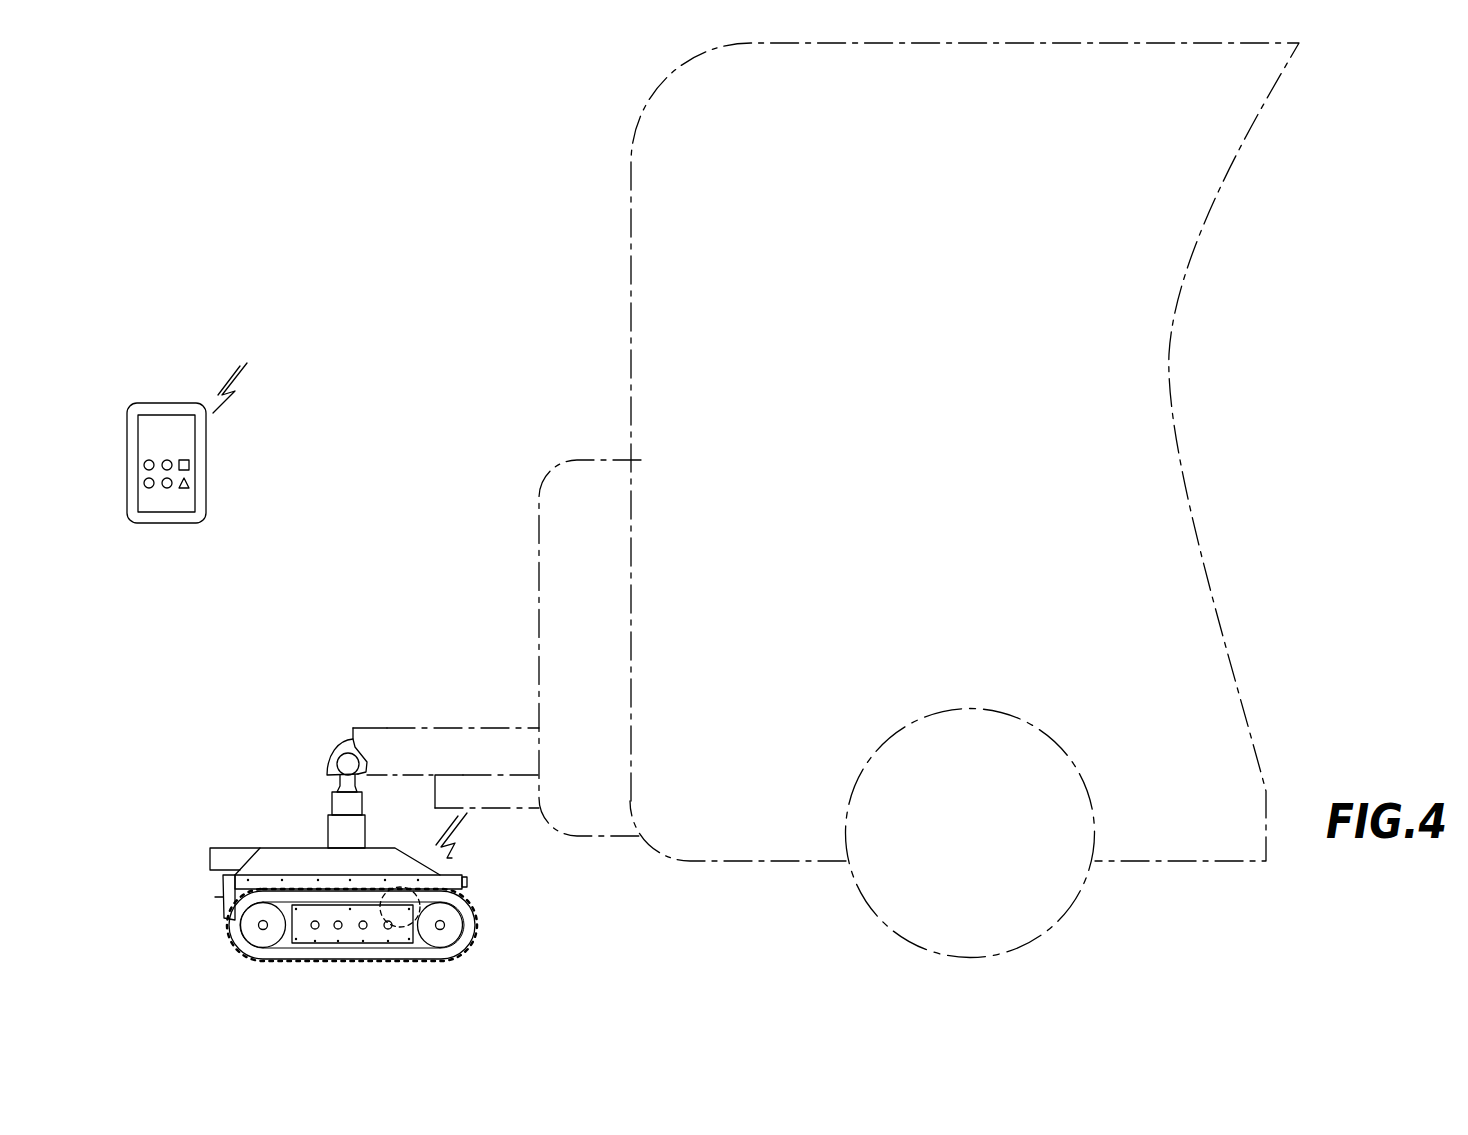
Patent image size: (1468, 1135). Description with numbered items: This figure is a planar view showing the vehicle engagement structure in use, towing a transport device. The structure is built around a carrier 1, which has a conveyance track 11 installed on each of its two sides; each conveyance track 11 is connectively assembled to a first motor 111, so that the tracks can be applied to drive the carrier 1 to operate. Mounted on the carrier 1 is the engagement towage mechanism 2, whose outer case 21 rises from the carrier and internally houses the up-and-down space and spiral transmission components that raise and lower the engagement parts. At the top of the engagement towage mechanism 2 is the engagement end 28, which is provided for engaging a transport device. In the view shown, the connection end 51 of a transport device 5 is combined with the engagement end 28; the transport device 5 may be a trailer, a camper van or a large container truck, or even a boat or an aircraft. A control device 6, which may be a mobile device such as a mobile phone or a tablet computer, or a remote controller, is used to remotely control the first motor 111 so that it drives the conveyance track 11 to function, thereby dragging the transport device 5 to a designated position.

The carrier 1 is at (222, 888).
The conveyance track 11 is at (233, 930).
The first motor 111 is at (458, 890).
The engagement towage mechanism 2 is at (277, 810).
The outer case 21 is at (328, 830).
The engagement end 28 is at (339, 757).
The transport device 5 is at (630, 570).
The connection end 51 is at (373, 728).
The control device 6 is at (165, 398).